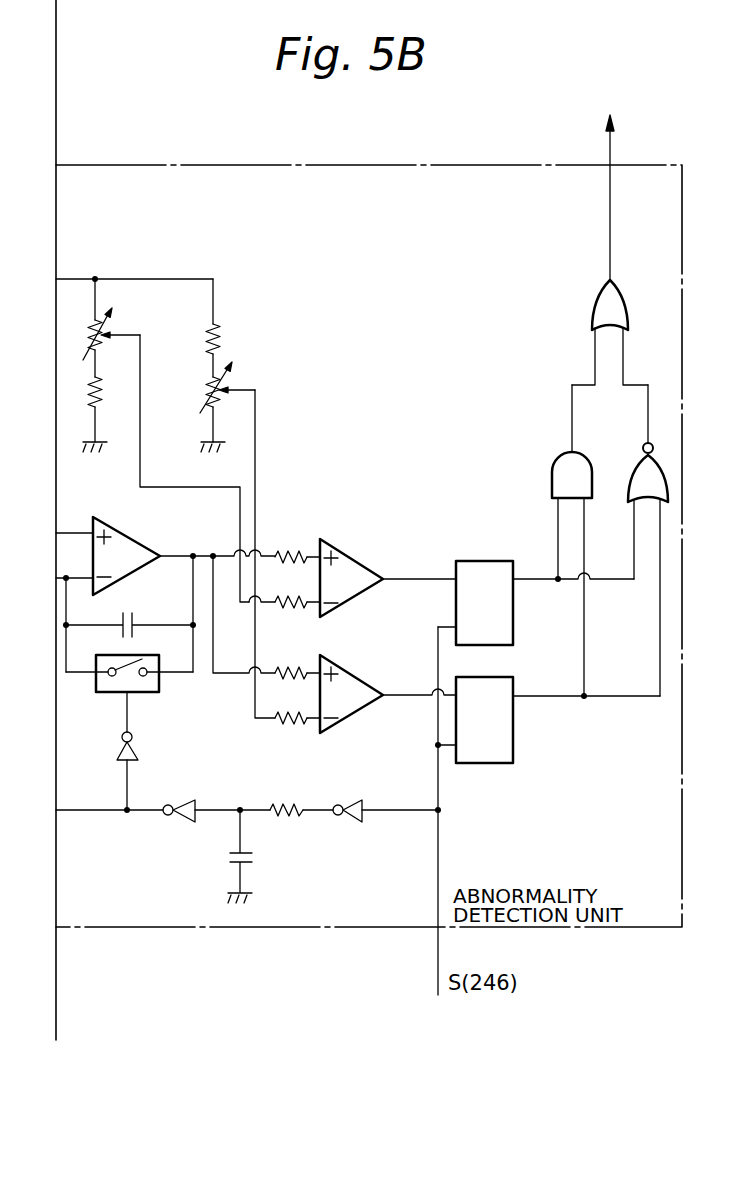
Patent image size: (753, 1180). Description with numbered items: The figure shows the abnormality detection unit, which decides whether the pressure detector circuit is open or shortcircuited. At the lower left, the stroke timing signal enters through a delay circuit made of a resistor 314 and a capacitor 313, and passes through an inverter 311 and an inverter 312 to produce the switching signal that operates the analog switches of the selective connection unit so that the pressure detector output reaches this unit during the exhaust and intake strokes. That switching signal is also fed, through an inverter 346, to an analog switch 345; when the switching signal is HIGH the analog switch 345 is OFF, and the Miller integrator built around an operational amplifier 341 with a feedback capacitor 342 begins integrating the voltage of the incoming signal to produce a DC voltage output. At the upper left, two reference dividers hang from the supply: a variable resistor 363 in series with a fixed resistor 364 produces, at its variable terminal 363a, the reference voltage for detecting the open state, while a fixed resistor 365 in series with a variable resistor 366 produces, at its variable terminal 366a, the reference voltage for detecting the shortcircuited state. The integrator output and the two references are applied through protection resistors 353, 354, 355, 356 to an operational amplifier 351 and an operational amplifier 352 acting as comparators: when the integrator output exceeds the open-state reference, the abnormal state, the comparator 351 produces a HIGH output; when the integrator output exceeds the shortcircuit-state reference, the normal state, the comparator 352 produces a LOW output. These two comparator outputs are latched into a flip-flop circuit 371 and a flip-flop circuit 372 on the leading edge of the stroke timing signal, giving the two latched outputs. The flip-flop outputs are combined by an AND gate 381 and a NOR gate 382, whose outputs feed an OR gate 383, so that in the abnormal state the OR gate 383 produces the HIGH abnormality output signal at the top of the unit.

The variable resistor 363 is at (100, 320).
The variable terminal of the resistor 363 363a is at (150, 327).
The fixed resistor 364 is at (103, 392).
The fixed resistor 365 is at (219, 333).
The variable resistor 366 is at (222, 383).
The variable terminal of the resistor 366 366a is at (257, 392).
The operational amplifier 341 is at (118, 531).
The capacitor 342 is at (125, 614).
The analog switch 345 is at (110, 693).
The inverter 346 is at (118, 753).
The resistor 353 is at (290, 550).
The resistor 354 is at (297, 612).
The resistor 355 is at (275, 674).
The resistor 356 is at (285, 720).
The operational amplifier 351 is at (354, 560).
The operational amplifier 352 is at (368, 684).
The flip-flop circuit 371 is at (498, 562).
The flip-flop circuit 372 is at (487, 765).
The AND gate 381 is at (555, 461).
The NOR gate 382 is at (640, 461).
The OR gate 383 is at (601, 287).
The inverter 311 is at (355, 801).
The inverter 312 is at (191, 801).
The capacitor 313 is at (254, 858).
The resistor 314 is at (280, 803).